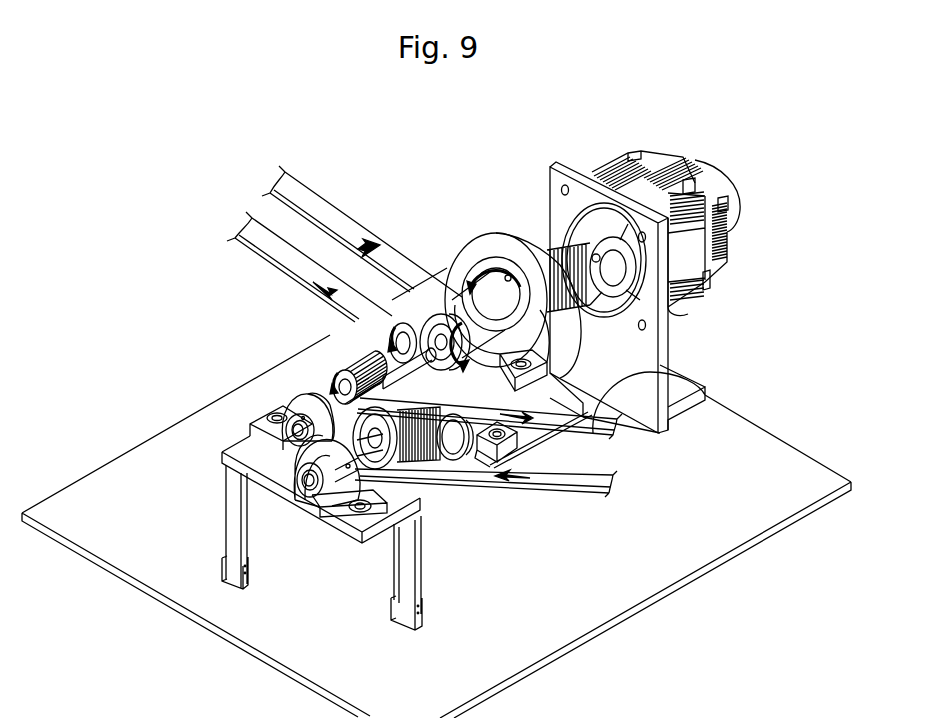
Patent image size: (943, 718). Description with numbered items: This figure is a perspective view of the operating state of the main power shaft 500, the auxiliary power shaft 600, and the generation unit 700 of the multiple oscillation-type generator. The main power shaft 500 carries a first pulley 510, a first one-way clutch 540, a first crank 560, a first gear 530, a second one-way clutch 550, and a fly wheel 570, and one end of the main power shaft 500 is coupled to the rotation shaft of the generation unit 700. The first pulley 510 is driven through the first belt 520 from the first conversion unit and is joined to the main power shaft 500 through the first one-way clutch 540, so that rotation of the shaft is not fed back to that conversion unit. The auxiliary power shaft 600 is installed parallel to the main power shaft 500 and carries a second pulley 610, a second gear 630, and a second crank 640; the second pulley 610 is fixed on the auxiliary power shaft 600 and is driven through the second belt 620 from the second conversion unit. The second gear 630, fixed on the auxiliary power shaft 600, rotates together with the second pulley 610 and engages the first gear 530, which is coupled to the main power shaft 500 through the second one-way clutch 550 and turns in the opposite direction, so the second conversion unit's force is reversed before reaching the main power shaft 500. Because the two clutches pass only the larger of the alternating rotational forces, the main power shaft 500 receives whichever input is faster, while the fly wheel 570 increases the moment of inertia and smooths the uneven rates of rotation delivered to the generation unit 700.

The main power shaft 500 is at (345, 372).
The first pulley 510 is at (425, 335).
The first belt 520 is at (310, 200).
The first gear 530 is at (340, 398).
The first one-way clutch 540 is at (437, 330).
The second one-way clutch 550 is at (348, 402).
The first crank 560 is at (408, 317).
The fly wheel 570 is at (500, 237).
The auxiliary power shaft 600 is at (400, 517).
The second pulley 610 is at (438, 460).
The second belt 620 is at (598, 422).
The second gear 630 is at (470, 462).
The second crank 640 is at (500, 445).
The generation unit 700 is at (722, 188).